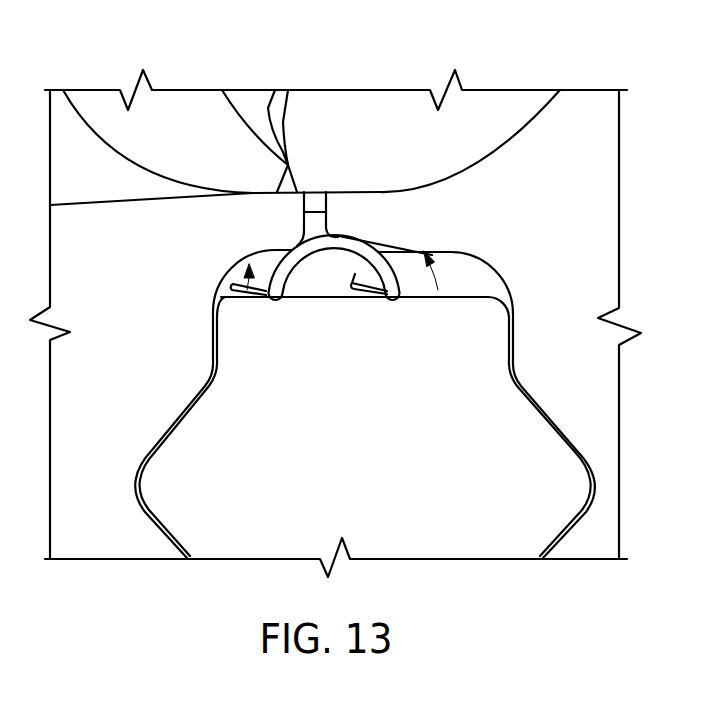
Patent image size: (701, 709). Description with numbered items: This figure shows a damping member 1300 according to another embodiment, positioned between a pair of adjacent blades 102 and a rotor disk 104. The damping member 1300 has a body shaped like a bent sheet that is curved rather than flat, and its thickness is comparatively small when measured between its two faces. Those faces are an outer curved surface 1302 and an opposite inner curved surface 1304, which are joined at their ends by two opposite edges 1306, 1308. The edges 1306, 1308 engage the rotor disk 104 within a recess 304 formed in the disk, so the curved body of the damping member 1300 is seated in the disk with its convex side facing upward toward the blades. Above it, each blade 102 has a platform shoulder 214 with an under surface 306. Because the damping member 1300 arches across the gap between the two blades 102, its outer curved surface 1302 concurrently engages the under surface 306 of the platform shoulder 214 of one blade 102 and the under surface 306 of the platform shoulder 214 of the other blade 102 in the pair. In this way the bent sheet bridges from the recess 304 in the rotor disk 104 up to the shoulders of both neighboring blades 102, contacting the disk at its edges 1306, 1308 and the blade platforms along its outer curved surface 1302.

The blade 102 is at (193, 106).
The rotor disk 104 is at (511, 406).
The platform shoulder 214 is at (277, 212).
The recess 304 is at (497, 387).
The under surface 306 is at (247, 290).
The damping member 1300 is at (420, 251).
The outer curved surface 1302 is at (357, 237).
The inner curved surface 1304 is at (350, 262).
The edge 1306 is at (395, 294).
The edge 1308 is at (270, 299).